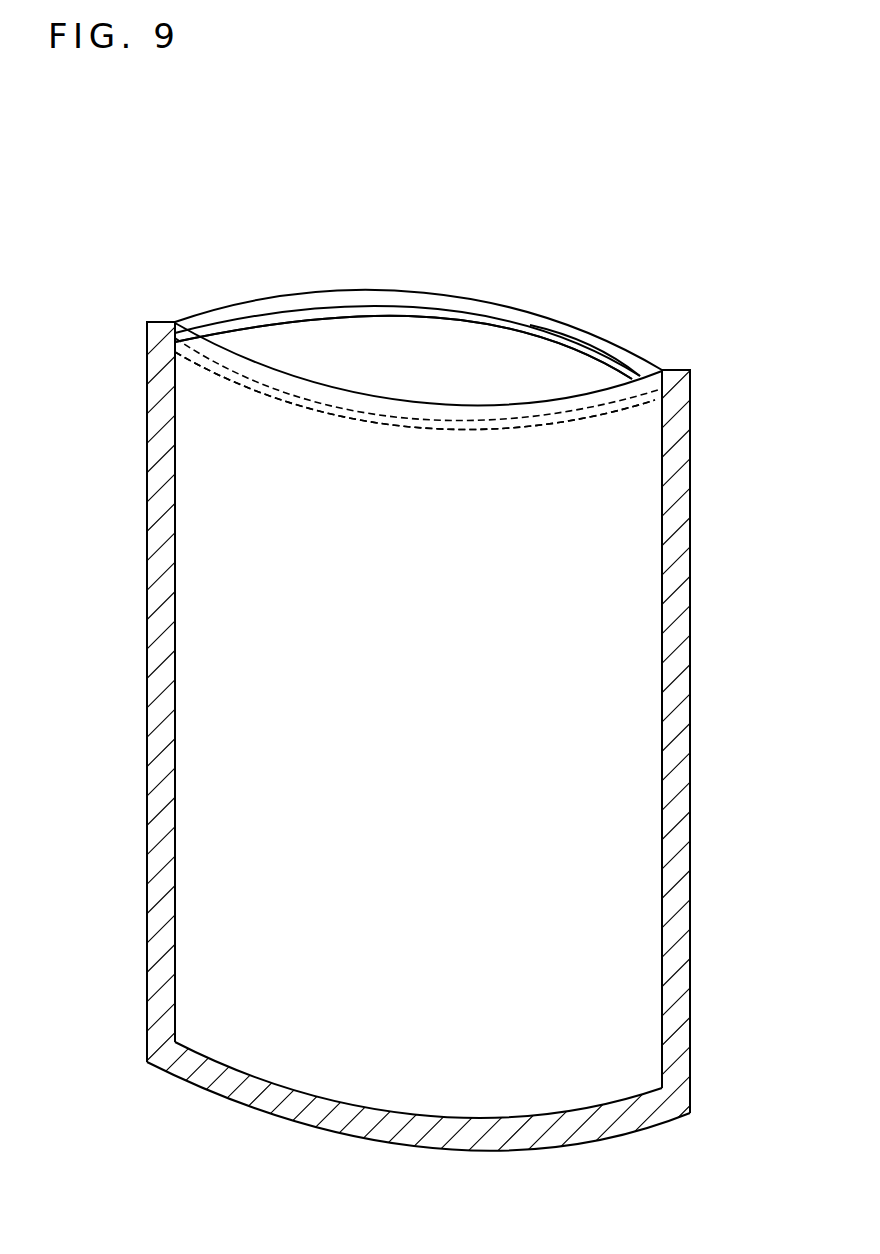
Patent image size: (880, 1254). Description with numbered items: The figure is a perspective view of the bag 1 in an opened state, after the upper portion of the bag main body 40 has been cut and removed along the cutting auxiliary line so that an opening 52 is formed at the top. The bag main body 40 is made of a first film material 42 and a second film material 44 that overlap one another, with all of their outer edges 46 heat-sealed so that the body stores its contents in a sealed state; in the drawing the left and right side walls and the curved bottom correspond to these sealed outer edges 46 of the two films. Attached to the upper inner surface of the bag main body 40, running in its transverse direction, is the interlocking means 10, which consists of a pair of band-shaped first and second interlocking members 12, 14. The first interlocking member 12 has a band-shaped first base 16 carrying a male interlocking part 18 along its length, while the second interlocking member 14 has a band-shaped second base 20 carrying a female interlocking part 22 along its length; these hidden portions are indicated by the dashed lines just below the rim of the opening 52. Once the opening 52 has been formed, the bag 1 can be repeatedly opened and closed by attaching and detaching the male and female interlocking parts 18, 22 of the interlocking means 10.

The bag 1 is at (574, 201).
The interlocking means 10 is at (299, 306).
The first interlocking member 12 is at (353, 422).
The second interlocking member 14 is at (579, 348).
The first base 16 is at (500, 433).
The male interlocking part 18 is at (415, 391).
The second base 20 is at (515, 320).
The female interlocking part 22 is at (403, 347).
The bag main body 40 is at (690, 859).
The first film material 42 is at (217, 462).
The second film material 44 is at (230, 313).
The outer edges 46 is at (677, 700).
The opening 52 is at (428, 380).